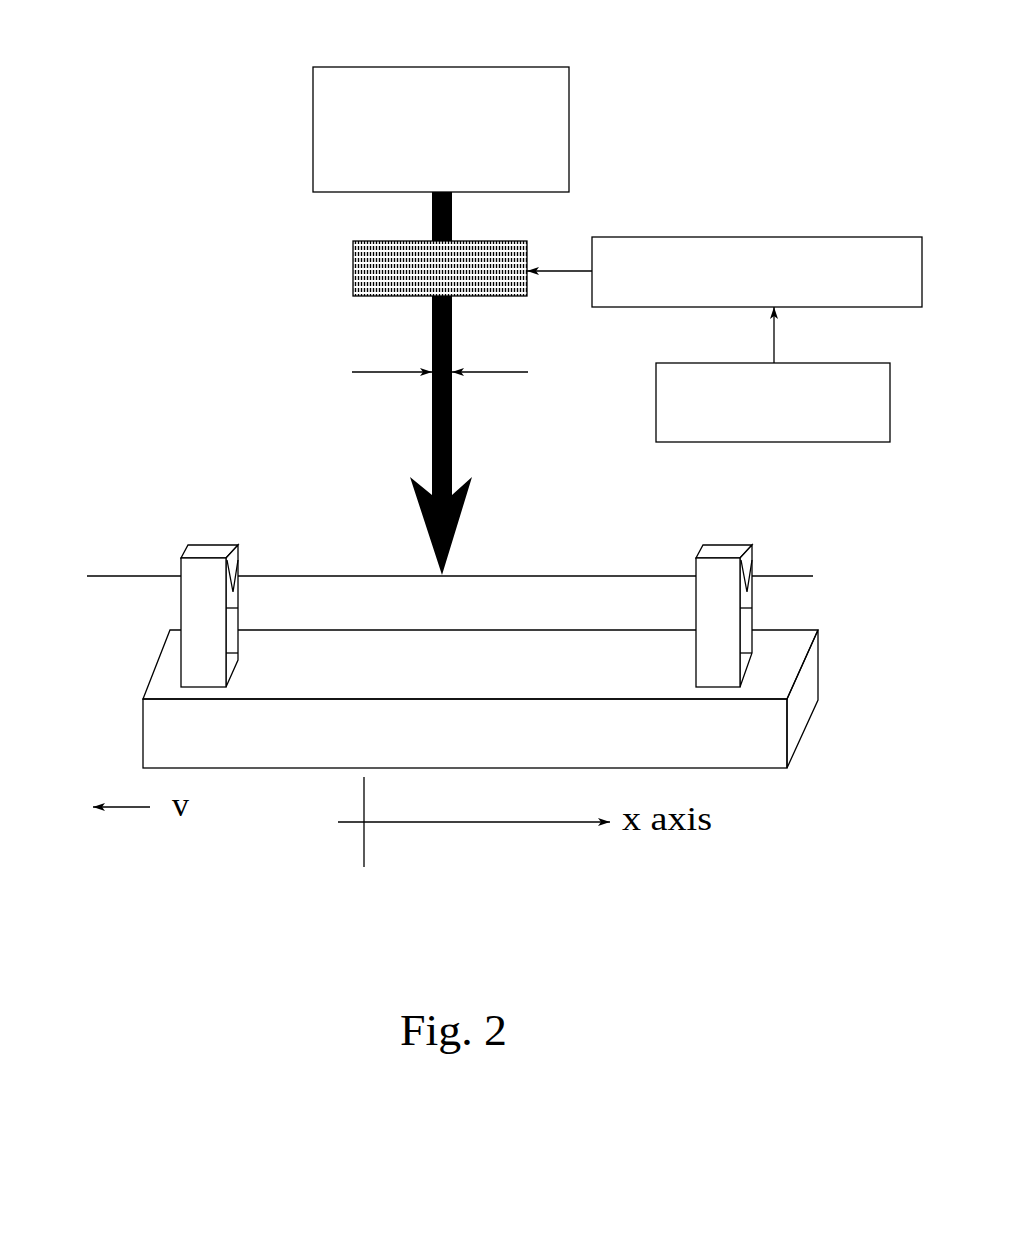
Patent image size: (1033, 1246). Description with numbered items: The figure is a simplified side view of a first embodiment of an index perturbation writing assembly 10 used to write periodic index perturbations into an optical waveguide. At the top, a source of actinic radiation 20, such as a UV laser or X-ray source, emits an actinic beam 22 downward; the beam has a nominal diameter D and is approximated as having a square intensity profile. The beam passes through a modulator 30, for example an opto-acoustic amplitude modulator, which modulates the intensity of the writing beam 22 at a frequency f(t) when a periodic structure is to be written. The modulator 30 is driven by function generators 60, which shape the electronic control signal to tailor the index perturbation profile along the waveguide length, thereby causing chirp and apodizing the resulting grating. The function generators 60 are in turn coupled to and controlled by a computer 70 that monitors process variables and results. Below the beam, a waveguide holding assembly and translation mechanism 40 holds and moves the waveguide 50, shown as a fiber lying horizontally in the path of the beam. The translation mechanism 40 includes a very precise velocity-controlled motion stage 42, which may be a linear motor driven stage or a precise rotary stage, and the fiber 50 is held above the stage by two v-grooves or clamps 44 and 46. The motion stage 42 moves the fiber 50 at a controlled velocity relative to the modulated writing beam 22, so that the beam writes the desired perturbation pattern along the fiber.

The index perturbation writing assembly 10 is at (118, 95).
The source of actinic radiation 20 is at (583, 118).
The actinic beam 22 is at (470, 505).
The modulator 30 is at (330, 265).
The waveguide holding assembly and translation mechanism 40 is at (248, 518).
The motion stage 42 is at (467, 671).
The v-groove or clamp 44 is at (740, 552).
The v-groove or clamp 46 is at (192, 570).
The waveguide 50 is at (587, 572).
The function generator 60 is at (765, 242).
The computer 70 is at (863, 433).